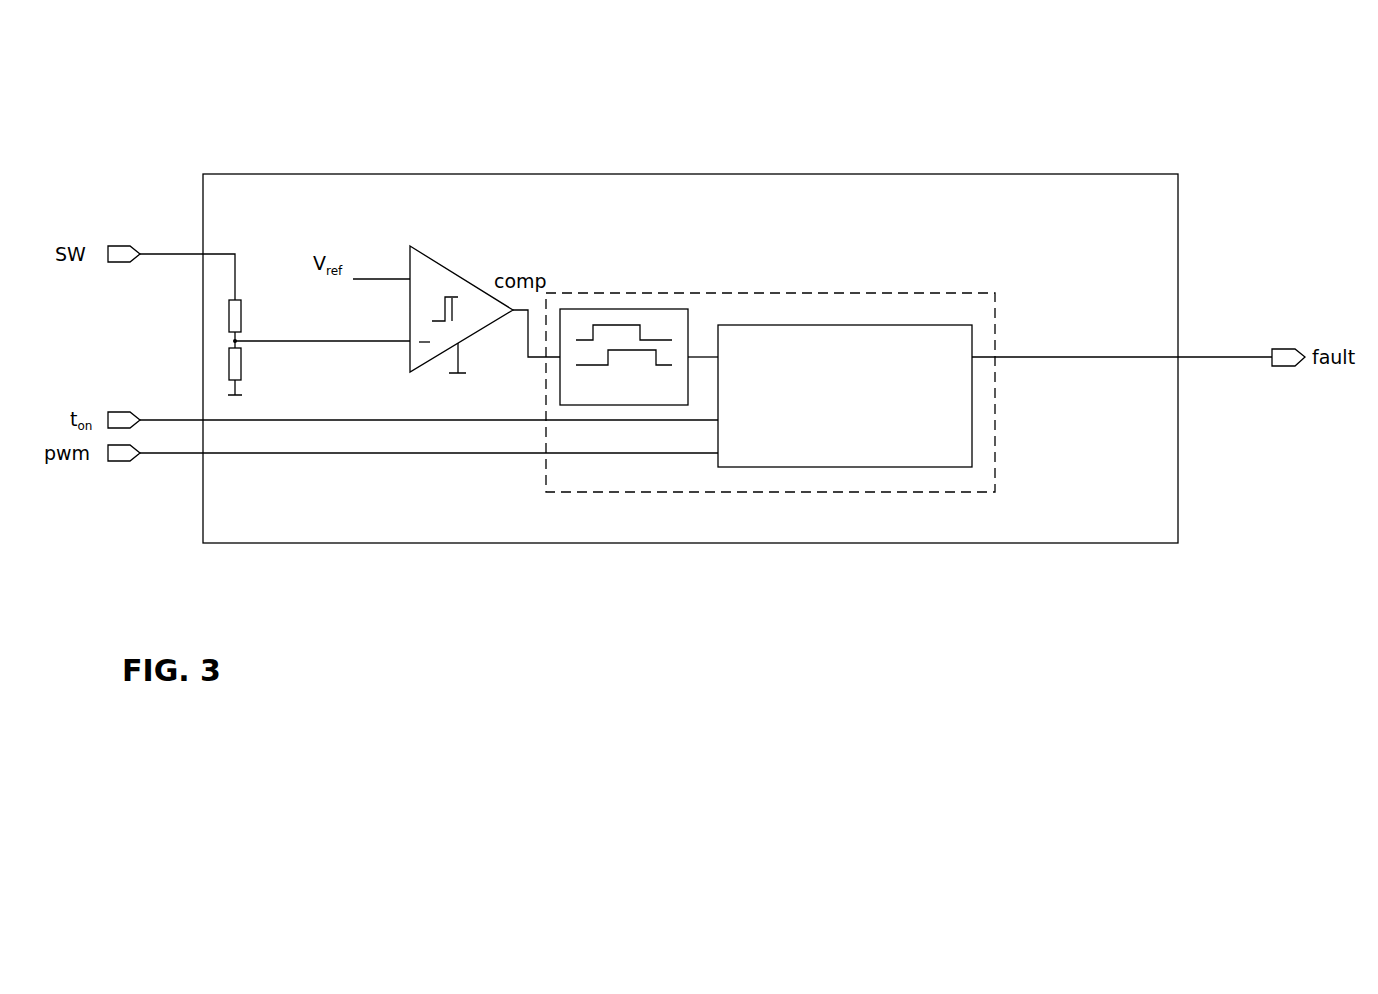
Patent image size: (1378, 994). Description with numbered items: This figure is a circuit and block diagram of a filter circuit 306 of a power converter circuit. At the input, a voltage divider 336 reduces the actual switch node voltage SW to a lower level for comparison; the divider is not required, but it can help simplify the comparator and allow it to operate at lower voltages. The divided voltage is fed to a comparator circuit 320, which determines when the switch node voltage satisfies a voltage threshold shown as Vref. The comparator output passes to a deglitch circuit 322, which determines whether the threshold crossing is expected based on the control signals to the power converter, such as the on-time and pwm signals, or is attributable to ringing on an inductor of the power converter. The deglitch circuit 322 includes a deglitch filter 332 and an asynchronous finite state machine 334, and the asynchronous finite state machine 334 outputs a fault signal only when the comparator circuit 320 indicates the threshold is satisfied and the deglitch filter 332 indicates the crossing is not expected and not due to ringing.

The filter circuit 306 is at (657, 173).
The comparator circuit 320 is at (442, 264).
The deglitch circuit 322 is at (850, 294).
The deglitch filter 332 is at (690, 310).
The asynchronous finite state machine 334 is at (878, 468).
The voltage divider 336 is at (228, 365).